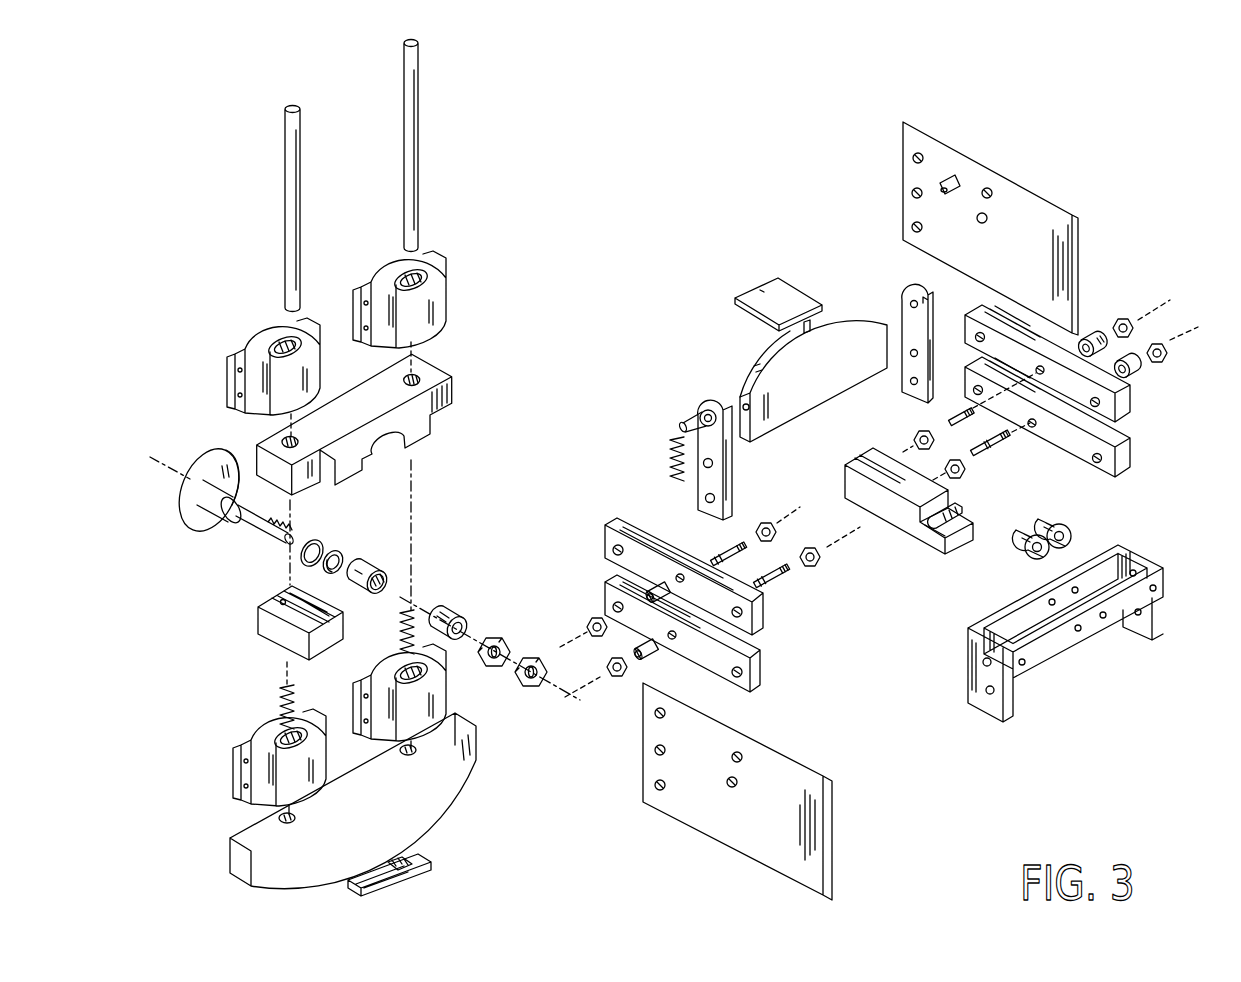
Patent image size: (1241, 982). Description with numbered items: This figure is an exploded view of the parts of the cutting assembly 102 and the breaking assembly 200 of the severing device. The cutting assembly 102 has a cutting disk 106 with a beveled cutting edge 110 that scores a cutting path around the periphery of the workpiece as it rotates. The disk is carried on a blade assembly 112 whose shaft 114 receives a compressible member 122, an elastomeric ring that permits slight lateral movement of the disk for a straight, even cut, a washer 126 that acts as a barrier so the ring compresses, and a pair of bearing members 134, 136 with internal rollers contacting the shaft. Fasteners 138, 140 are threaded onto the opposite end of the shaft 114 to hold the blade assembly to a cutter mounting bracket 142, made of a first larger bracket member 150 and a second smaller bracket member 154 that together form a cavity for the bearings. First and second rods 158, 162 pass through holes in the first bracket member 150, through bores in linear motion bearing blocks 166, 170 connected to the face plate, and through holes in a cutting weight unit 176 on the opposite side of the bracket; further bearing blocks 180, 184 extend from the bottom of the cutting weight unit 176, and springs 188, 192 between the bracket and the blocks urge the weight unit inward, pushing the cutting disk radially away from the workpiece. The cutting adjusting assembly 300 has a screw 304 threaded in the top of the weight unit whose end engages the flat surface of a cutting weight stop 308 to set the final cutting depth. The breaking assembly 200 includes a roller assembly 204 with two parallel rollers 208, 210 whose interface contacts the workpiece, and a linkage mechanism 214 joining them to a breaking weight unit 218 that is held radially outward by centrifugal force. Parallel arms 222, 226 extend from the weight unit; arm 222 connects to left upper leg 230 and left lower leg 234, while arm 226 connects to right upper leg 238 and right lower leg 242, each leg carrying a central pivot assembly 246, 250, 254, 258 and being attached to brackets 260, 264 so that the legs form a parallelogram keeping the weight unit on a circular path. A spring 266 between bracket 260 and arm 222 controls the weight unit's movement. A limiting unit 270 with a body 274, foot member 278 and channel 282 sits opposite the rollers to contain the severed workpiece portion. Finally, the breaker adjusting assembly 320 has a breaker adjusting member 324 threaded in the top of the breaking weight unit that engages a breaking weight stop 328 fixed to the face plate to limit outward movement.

The cutting assembly 102 is at (536, 305).
The cutting disk 106 is at (187, 515).
The cutting edge 110 is at (213, 455).
The blade assembly 112 is at (428, 598).
The shaft 114 is at (252, 521).
The compressible member 122 is at (303, 557).
The washer 126 is at (340, 546).
The bearing member 134 is at (375, 568).
The bearing member 136 is at (458, 610).
The fastener 138 is at (498, 640).
The fastener 140 is at (532, 690).
The cutter mounting bracket 142 is at (484, 420).
The first bracket member 150 is at (432, 375).
The second bracket member 154 is at (266, 628).
The first rod 158 is at (284, 152).
The second rod 162 is at (405, 152).
The linear motion bearing block 166 is at (250, 353).
The linear motion bearing block 170 is at (433, 266).
The cutting weight unit 176 is at (450, 781).
The linear motion bearing block 180 is at (253, 773).
The linear motion bearing block 184 is at (356, 708).
The spring 188 is at (275, 708).
The spring 192 is at (400, 640).
The breaking assembly 200 is at (1057, 185).
The roller assembly 204 is at (1140, 548).
The roller 208 is at (1020, 553).
The roller 210 is at (1050, 518).
The linkage mechanism 214 is at (1142, 393).
The breaking weight unit 218 is at (752, 372).
The arm 222 is at (713, 403).
The arm 226 is at (903, 312).
The left upper leg 230 is at (607, 523).
The left lower leg 234 is at (605, 583).
The right upper leg 238 is at (1125, 412).
The right lower leg 242 is at (1127, 465).
The pivot assembly 246 is at (720, 537).
The pivot assembly 250 is at (757, 563).
The pivot assembly 254 is at (1093, 330).
The pivot assembly 258 is at (1143, 340).
The bracket 260 is at (733, 837).
The bracket 264 is at (1068, 241).
The spring 266 is at (670, 450).
The limiting unit 270 is at (882, 545).
The body 274 is at (865, 460).
The foot member 278 is at (932, 542).
The channel 282 is at (953, 515).
The cutting adjusting assembly 300 is at (437, 840).
The screw 304 is at (420, 856).
The cutting weight stop 308 is at (398, 883).
The breaker adjusting assembly 320 is at (797, 275).
The breaker adjusting member 324 is at (825, 317).
The breaking weight stop 328 is at (755, 294).